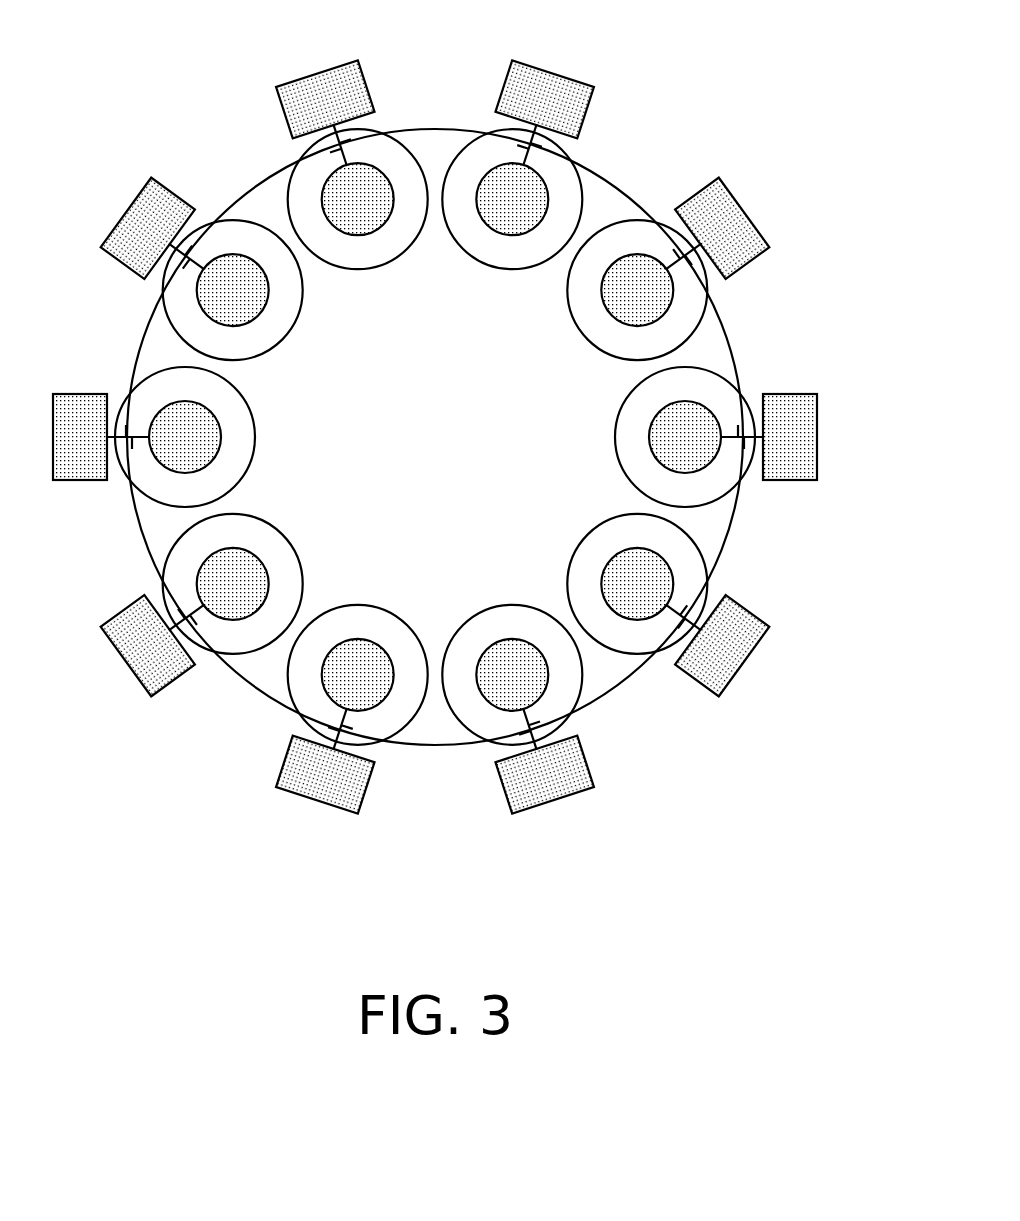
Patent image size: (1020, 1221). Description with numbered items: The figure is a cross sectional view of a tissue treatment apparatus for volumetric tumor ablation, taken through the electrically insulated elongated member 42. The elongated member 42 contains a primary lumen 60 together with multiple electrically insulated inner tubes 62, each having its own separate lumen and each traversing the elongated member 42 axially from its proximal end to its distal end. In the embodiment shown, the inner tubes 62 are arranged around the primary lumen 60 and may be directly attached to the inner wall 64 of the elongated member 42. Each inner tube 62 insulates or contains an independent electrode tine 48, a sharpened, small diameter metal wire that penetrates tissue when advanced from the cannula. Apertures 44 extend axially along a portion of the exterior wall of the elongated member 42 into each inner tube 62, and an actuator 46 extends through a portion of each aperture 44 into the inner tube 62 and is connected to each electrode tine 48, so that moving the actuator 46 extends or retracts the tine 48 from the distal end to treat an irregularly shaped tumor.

The elongated member 42 is at (768, 327).
The aperture 44 is at (680, 630).
The actuator 46 is at (576, 70).
The electrode tine 48 is at (196, 564).
The primary lumen 60 is at (430, 396).
The inner tube 62 is at (395, 164).
The inner wall 64 is at (736, 477).